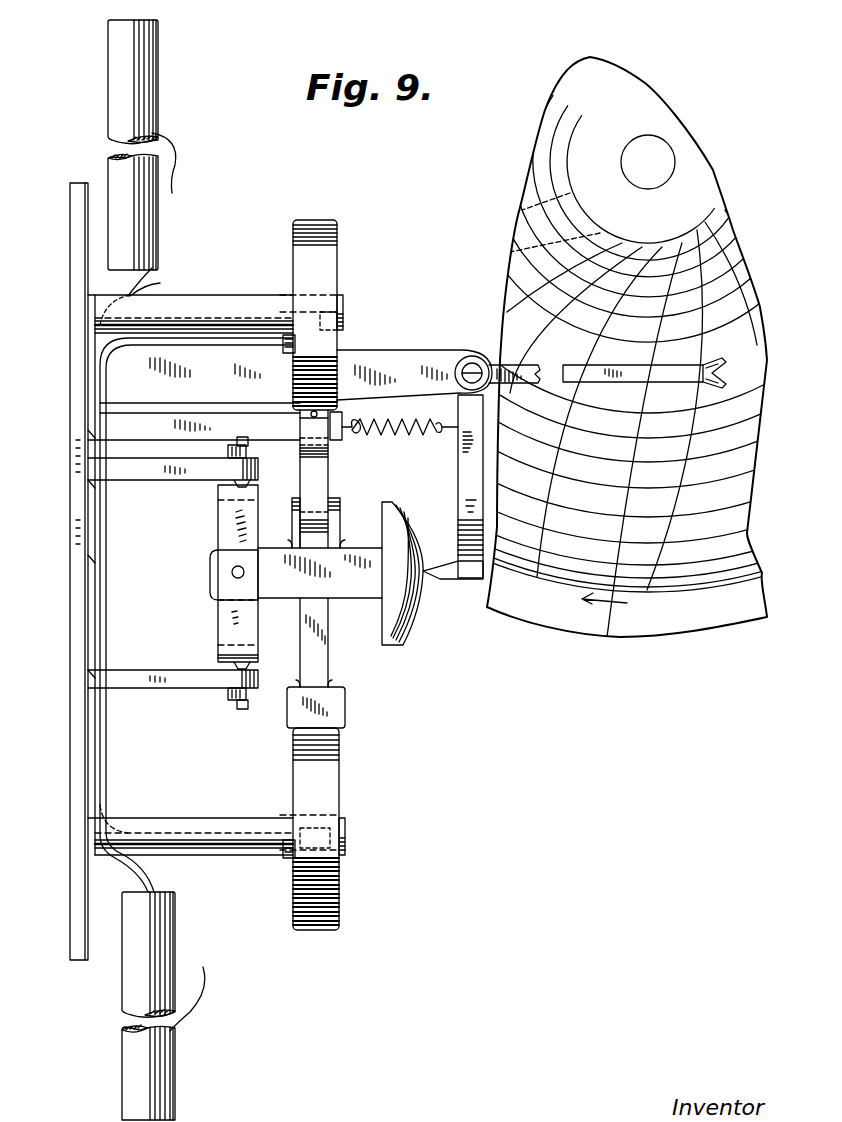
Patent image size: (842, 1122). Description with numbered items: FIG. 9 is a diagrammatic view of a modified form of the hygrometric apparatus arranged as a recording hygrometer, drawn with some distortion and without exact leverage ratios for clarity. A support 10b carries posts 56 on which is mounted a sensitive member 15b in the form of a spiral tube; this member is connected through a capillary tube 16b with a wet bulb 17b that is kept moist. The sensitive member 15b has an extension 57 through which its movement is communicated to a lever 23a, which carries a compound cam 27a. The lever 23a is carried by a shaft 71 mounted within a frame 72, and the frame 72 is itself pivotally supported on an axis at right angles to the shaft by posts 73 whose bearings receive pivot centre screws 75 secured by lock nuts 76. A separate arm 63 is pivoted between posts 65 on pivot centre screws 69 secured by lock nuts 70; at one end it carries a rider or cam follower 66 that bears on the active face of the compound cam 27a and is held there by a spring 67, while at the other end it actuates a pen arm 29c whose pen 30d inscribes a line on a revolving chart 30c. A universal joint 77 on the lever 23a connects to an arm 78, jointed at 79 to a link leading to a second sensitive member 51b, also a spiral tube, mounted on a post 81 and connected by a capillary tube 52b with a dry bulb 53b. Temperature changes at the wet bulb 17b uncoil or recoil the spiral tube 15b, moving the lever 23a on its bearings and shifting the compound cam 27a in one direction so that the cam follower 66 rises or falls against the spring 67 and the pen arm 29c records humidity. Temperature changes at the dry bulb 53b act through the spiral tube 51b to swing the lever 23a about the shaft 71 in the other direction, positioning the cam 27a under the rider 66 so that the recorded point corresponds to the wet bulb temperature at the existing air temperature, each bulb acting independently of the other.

The support 10b is at (80, 826).
The sensitive member 15b is at (398, 785).
The capillary tube 16b is at (203, 287).
The wet bulb 17b is at (210, 212).
The lever 23a is at (292, 592).
The compound cam 27a is at (466, 646).
The pen arm 29c is at (686, 405).
The chart 30c is at (613, 638).
The pen 30d is at (722, 385).
The second sensitive member 51b is at (396, 263).
The capillary tube 52b is at (214, 344).
The dry bulb 53b is at (226, 956).
The posts 56 is at (236, 800).
The extension 57 is at (337, 705).
The arm 63 is at (458, 470).
The posts 65 is at (401, 349).
The cam follower 66 is at (441, 563).
The spring 67 is at (407, 433).
The pivot centre screw 69 is at (473, 355).
The lock nut 70 is at (459, 358).
The shaft 71 is at (233, 574).
The frame 72 is at (222, 632).
The posts 73 is at (199, 477).
The pivot centre screw 75 is at (243, 443).
The lock nut 76 is at (226, 455).
The universal joint 77 is at (334, 525).
The arm 78 is at (322, 475).
The joint 79 is at (305, 432).
The post 81 is at (235, 305).